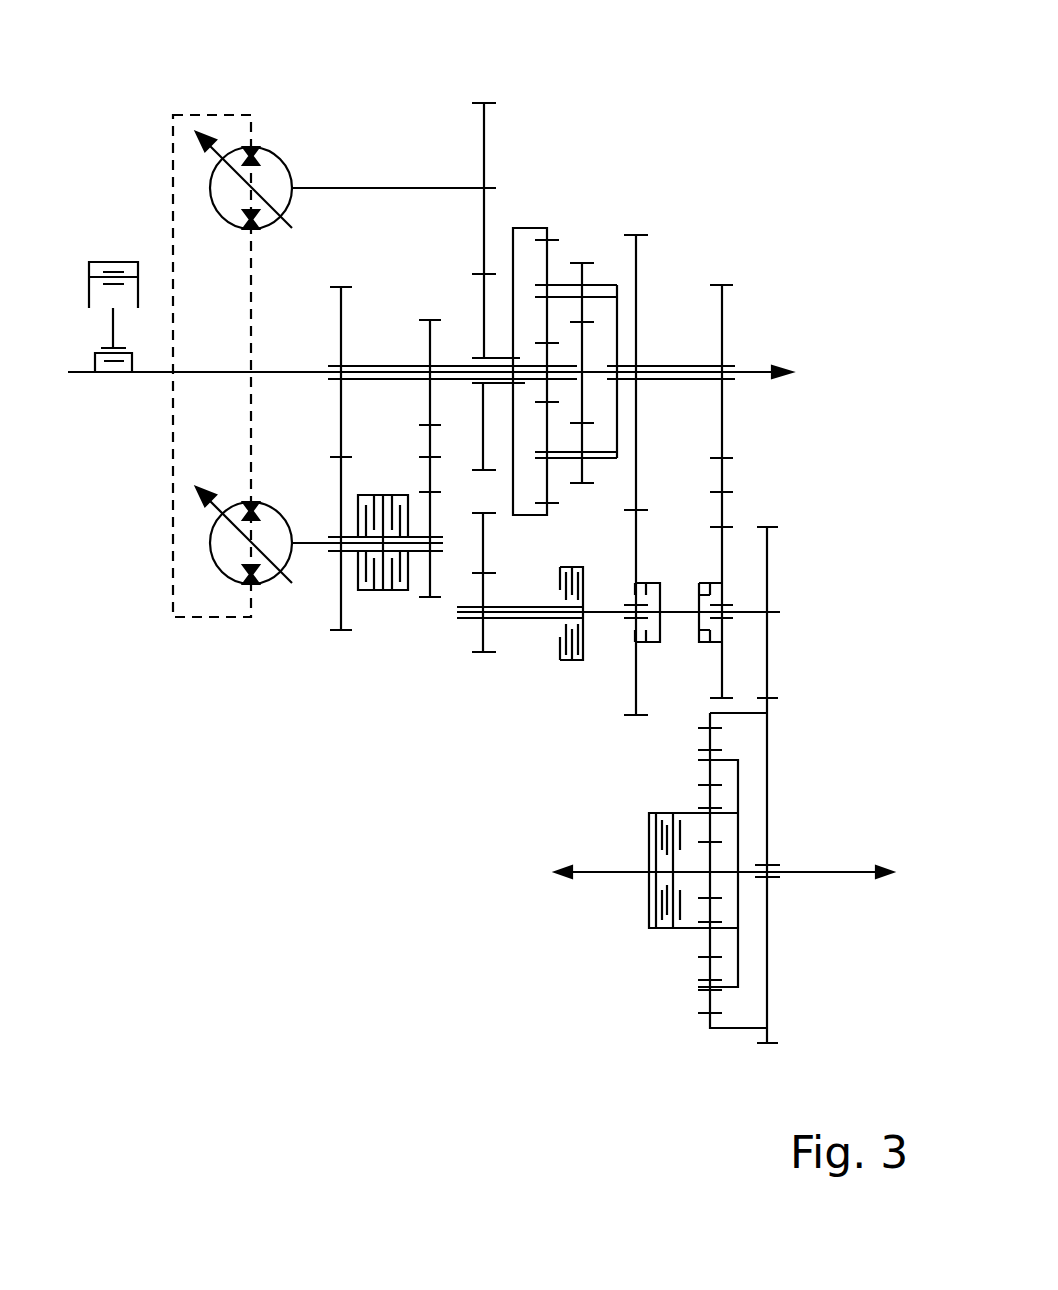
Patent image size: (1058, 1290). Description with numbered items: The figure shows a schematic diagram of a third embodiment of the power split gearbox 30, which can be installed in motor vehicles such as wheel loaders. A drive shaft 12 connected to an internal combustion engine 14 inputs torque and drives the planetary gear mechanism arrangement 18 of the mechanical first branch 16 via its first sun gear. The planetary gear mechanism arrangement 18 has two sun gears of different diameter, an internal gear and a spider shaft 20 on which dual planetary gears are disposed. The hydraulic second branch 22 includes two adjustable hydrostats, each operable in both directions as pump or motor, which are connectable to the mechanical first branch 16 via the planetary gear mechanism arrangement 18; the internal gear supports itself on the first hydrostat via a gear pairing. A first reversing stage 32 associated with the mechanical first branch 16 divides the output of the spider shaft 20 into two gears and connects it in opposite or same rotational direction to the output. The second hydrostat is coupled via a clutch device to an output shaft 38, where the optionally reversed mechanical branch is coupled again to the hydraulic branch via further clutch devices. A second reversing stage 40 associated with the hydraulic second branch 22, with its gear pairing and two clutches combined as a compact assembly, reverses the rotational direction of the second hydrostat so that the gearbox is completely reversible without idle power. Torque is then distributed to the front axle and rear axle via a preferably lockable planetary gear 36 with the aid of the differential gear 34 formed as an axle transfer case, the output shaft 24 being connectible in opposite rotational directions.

The drive shaft 12 is at (208, 369).
The internal combustion engine 14 is at (110, 226).
The mechanical first branch 16 is at (538, 117).
The planetary gear mechanism arrangement 18 is at (582, 173).
The spider shaft 20 is at (617, 327).
The hydraulic second branch 22 is at (250, 88).
The output shaft 24 is at (599, 871).
The power split gearbox 30 is at (780, 101).
The first reversing stage 32 is at (686, 190).
The differential gear 34 is at (628, 955).
The lockable planetary gear 36 is at (705, 1074).
The output shaft 38 is at (612, 615).
The second reversing stage 40 is at (383, 658).